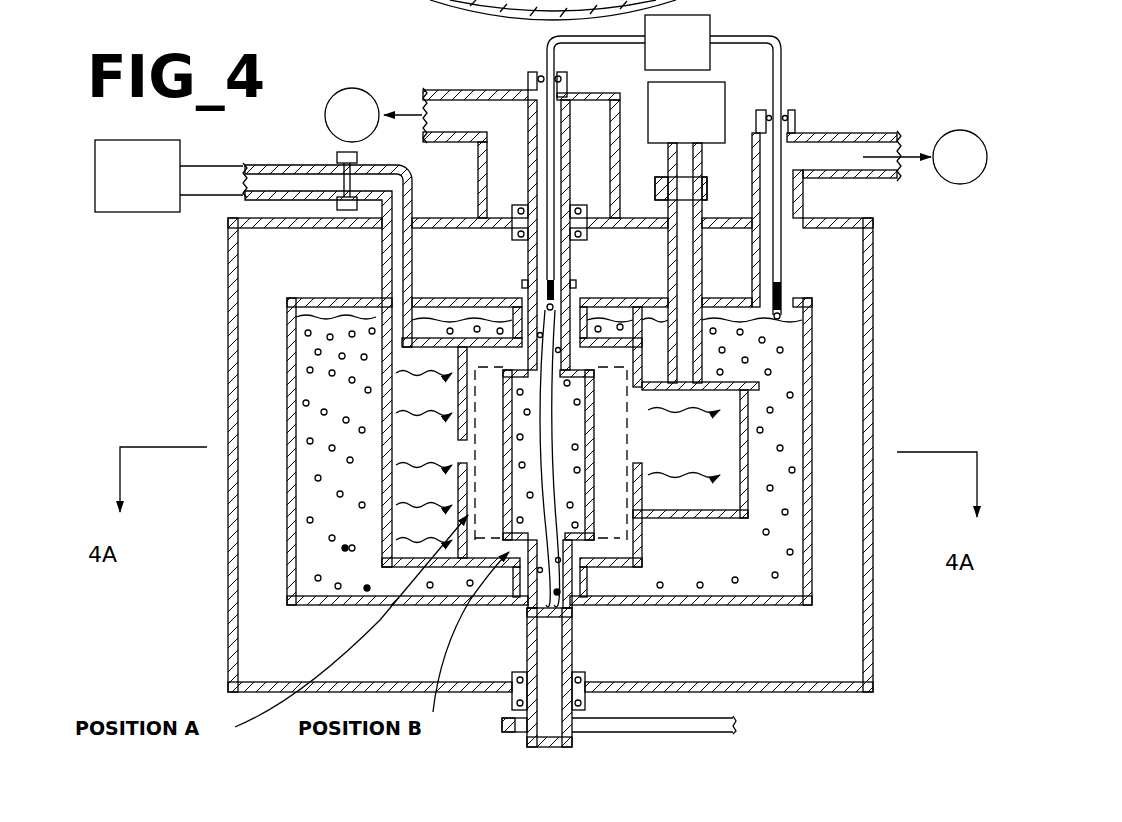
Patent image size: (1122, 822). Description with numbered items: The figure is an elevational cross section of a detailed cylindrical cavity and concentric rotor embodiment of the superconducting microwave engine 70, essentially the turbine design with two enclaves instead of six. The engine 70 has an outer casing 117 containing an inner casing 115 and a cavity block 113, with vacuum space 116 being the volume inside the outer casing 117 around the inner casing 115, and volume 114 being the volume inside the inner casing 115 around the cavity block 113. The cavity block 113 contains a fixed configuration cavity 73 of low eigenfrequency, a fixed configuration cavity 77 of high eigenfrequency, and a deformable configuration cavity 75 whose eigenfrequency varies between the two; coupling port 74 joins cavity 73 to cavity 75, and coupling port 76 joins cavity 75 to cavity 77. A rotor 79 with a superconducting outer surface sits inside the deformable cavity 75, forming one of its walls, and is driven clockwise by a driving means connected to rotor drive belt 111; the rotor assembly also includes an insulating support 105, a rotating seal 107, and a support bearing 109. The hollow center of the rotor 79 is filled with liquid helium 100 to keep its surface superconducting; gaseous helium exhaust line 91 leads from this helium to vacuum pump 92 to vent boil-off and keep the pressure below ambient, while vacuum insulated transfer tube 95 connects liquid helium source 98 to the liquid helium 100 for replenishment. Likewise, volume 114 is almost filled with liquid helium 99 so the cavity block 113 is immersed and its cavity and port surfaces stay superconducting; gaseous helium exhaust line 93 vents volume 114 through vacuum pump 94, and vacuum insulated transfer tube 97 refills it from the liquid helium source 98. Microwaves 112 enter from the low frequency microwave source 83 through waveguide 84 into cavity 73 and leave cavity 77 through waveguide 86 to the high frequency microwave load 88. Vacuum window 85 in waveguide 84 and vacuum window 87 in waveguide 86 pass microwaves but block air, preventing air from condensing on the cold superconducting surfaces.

The engine 70 is at (832, 69).
The fixed configuration cavity 73 is at (433, 502).
The coupling port 74 is at (460, 450).
The deformable configuration cavity 75 is at (488, 527).
The coupling port 76 is at (633, 448).
The fixed configuration cavity 77 is at (708, 445).
The rotor 79 is at (582, 543).
The low frequency microwave source 83 is at (118, 188).
The waveguide 84 is at (382, 245).
The vacuum window 85 is at (337, 153).
The waveguide 86 is at (668, 257).
The vacuum window 87 is at (706, 181).
The high frequency microwave load 88 is at (672, 124).
The gaseous helium exhaust line 91 is at (510, 120).
The vacuum pump 92 is at (363, 88).
The gaseous helium exhaust line 93 is at (798, 152).
The vacuum pump 94 is at (967, 183).
The vacuum insulated transfer tube 95 is at (560, 45).
The vacuum insulated transfer tube 97 is at (783, 58).
The liquid helium source 98 is at (664, 55).
The liquid helium 99 is at (307, 402).
The liquid helium 100 is at (533, 403).
The insulating support 105 is at (530, 633).
The rotating seal 107 is at (583, 675).
The support bearing 109 is at (587, 700).
The rotor drive belt 111 is at (730, 718).
The microwaves 112 is at (705, 452).
The cavity block 113 is at (640, 553).
The volume 114 is at (302, 308).
The inner casing 115 is at (815, 565).
The vacuum space 116 is at (845, 320).
The outer casing 117 is at (872, 383).